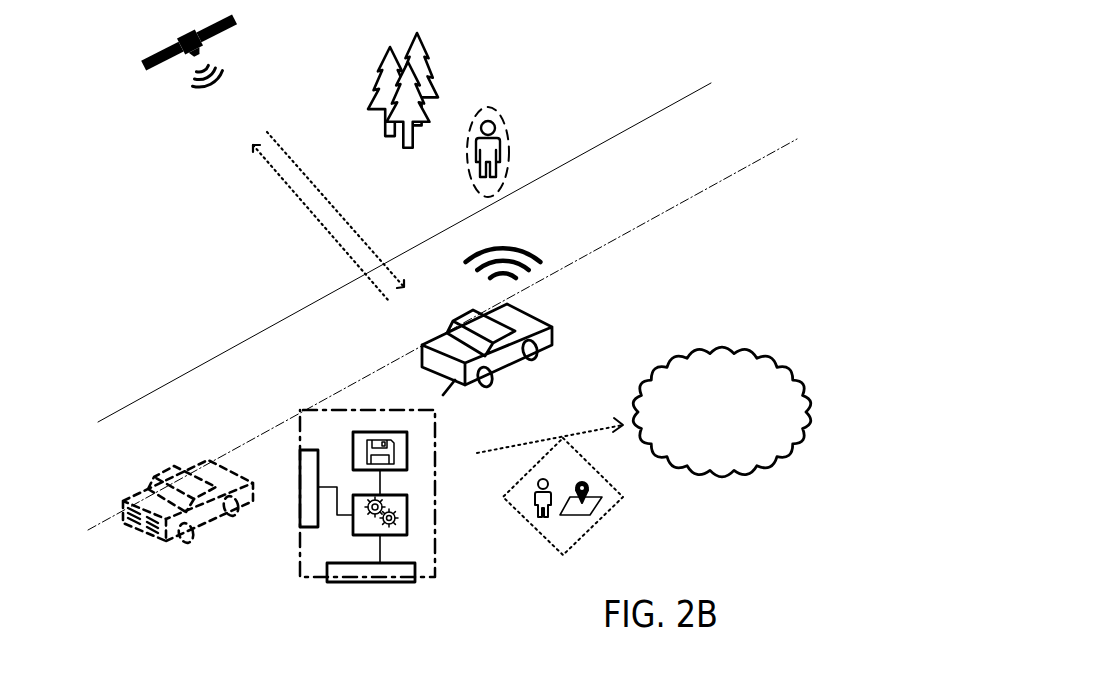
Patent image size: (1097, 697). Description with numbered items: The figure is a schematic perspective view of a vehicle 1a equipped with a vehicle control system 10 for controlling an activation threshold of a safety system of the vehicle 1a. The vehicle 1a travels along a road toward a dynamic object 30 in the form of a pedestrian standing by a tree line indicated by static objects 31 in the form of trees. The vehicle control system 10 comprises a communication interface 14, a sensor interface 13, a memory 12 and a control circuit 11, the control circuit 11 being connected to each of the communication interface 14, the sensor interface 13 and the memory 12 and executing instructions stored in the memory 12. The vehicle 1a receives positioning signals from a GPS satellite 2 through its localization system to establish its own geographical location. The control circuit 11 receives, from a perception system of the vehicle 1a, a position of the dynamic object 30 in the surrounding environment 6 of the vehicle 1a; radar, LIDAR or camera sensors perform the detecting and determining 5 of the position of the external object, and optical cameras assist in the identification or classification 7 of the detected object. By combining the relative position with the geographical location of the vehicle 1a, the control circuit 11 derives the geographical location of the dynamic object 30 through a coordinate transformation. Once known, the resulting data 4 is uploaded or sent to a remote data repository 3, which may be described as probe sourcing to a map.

The vehicle 1a is at (552, 345).
The GPS satellite 2 is at (152, 64).
The remote data repository 3 is at (708, 353).
The data 4 is at (588, 532).
The detecting/determining the position 5 is at (556, 252).
The surrounding environment 6 is at (698, 250).
The identification/classification 7 is at (487, 108).
The vehicle control system 10 is at (435, 553).
The control circuit 11 is at (407, 503).
The memory 12 is at (357, 432).
The sensor interface 13 is at (327, 582).
The communication interface 14 is at (302, 530).
The dynamic object 30 is at (500, 147).
The static objects 31 is at (433, 51).